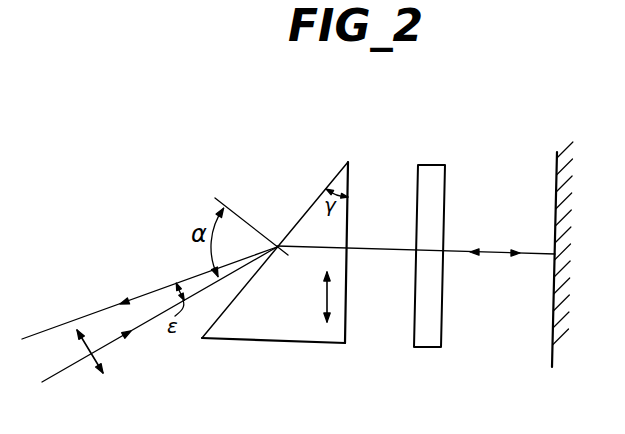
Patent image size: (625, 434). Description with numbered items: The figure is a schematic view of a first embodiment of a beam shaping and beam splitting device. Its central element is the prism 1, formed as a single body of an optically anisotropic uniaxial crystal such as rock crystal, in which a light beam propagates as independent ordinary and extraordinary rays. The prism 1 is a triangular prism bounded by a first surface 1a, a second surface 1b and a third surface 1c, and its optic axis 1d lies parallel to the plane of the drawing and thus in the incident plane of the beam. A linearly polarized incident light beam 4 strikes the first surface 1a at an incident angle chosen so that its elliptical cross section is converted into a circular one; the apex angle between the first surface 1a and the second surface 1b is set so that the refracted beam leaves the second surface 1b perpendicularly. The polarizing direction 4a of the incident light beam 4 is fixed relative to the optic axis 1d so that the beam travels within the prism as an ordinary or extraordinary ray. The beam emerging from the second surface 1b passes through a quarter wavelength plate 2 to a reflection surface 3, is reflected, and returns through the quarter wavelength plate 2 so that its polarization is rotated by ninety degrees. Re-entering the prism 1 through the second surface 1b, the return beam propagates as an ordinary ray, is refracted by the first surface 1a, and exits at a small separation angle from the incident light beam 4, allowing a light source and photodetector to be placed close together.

The prism 1 is at (302, 284).
The first surface 1a is at (307, 208).
The second surface 1b is at (352, 212).
The third surface 1c is at (257, 342).
The optic axis 1d is at (330, 296).
The quarter wavelength plate 2 is at (435, 165).
The reflection surface 3 is at (557, 175).
The incident light beam 4 is at (60, 374).
The polarizing direction 4a is at (97, 357).